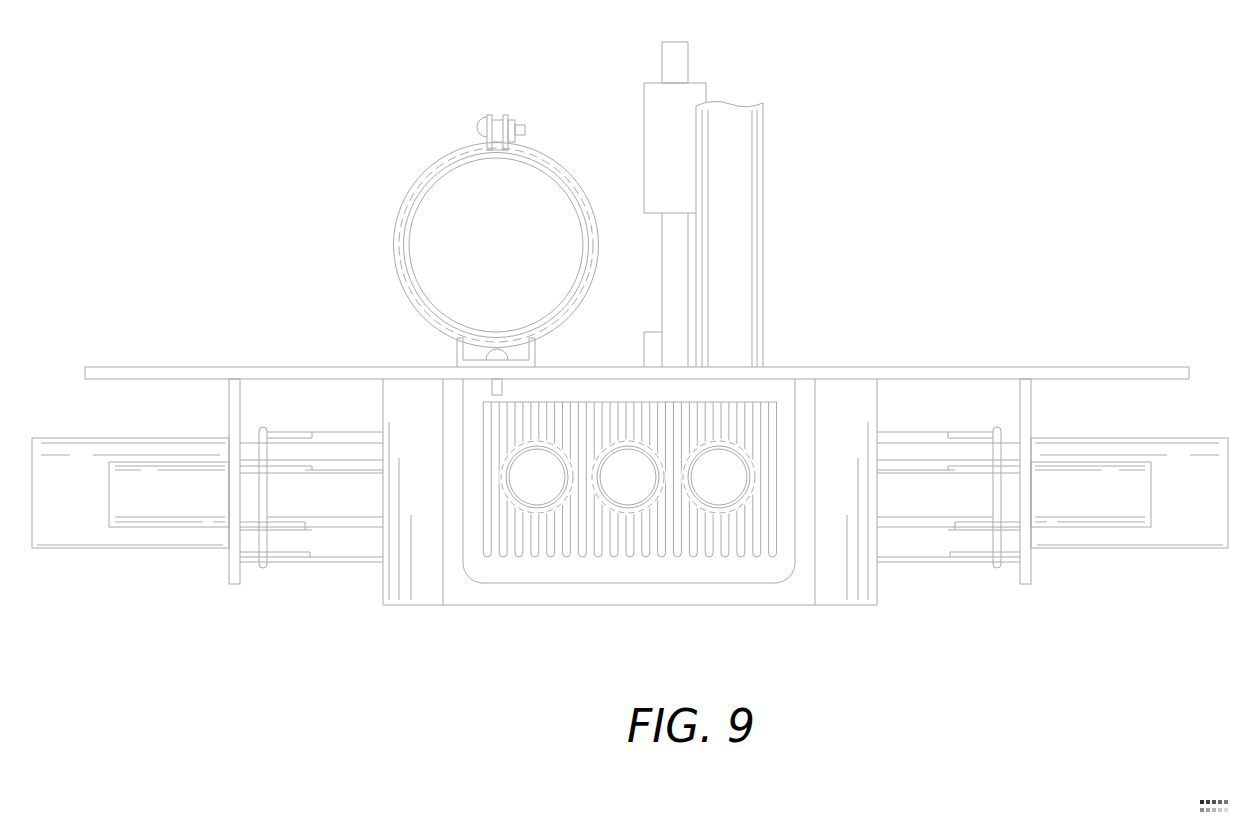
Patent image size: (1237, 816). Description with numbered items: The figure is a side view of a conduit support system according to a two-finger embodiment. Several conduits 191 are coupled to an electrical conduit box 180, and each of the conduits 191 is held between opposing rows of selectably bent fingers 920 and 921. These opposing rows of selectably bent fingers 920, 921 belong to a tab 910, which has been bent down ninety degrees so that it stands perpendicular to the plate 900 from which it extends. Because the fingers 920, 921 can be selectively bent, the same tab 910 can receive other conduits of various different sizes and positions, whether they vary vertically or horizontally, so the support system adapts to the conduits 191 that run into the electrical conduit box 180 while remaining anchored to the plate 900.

The plate 900 is at (951, 373).
The electrical conduit box 180 is at (873, 575).
The tab 910 is at (771, 567).
The selectably bent fingers 920 is at (698, 468).
The selectably bent fingers 921 is at (762, 450).
The conduits 191 is at (534, 450).